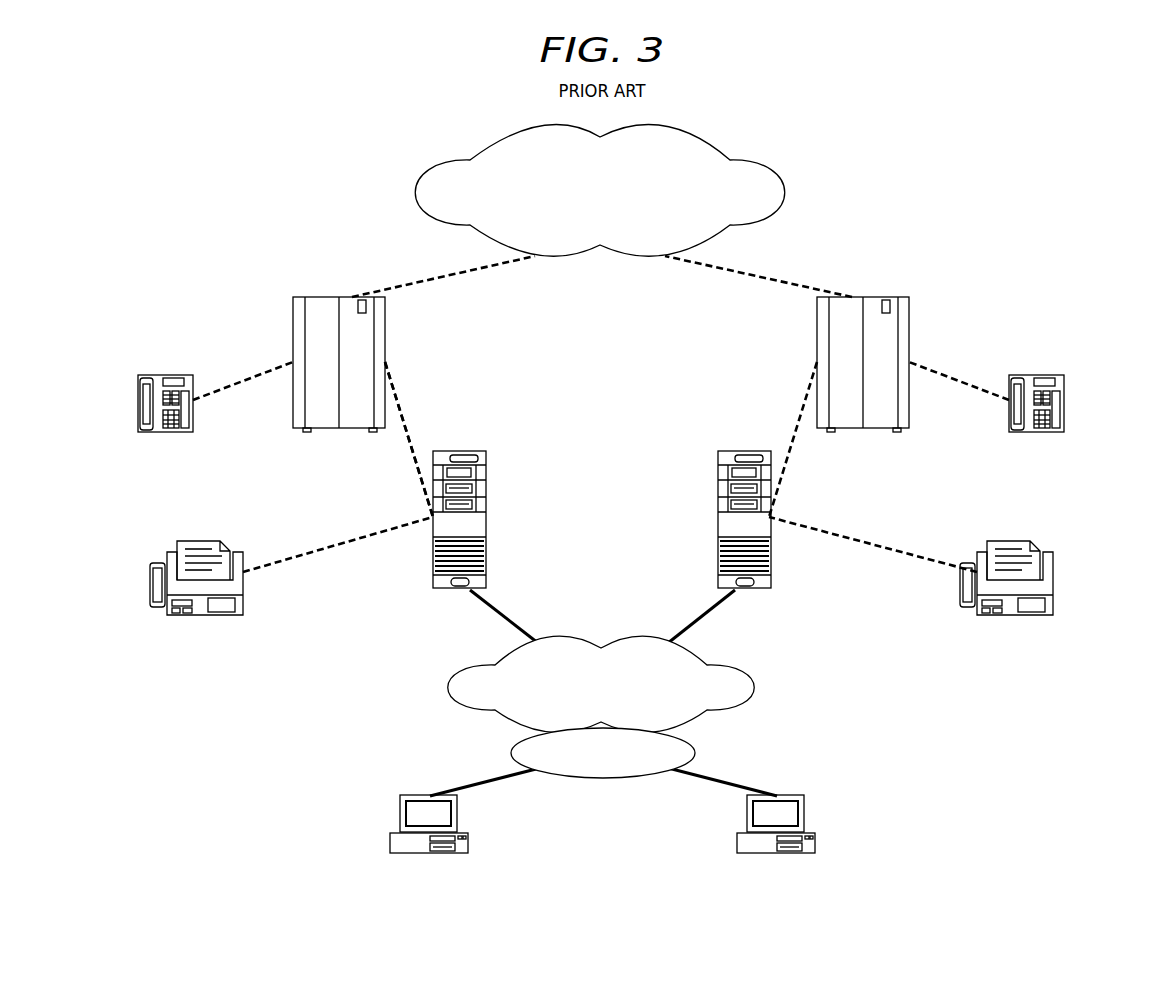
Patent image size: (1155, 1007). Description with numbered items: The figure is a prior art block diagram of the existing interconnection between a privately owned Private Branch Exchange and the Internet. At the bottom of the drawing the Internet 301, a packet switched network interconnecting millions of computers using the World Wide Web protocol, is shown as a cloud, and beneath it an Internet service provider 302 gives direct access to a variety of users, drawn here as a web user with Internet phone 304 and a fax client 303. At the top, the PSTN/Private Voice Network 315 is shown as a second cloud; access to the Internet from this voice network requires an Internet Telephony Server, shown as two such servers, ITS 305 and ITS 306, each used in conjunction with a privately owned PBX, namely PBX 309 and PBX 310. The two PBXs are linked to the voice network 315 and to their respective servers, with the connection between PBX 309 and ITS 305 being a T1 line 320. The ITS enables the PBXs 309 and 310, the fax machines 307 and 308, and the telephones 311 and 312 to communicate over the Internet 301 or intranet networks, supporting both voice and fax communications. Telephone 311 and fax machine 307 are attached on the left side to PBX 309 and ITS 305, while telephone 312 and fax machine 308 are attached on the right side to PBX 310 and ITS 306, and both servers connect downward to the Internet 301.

The Internet 301 is at (757, 688).
The Internet service provider 302 is at (603, 778).
The user 303 is at (807, 812).
The user 304 is at (398, 810).
The Internet Telephony Server 305 is at (488, 527).
The Internet Telephony Server 306 is at (717, 526).
The fax machine 307 is at (149, 583).
The fax machine 308 is at (1054, 583).
The Private Branch Exchange 309 is at (386, 327).
The Private Branch Exchange 310 is at (910, 327).
The telephone 311 is at (137, 401).
The telephone 312 is at (1068, 402).
The PSTN/Private Voice Network 315 is at (786, 190).
The T1 line 320 is at (400, 418).